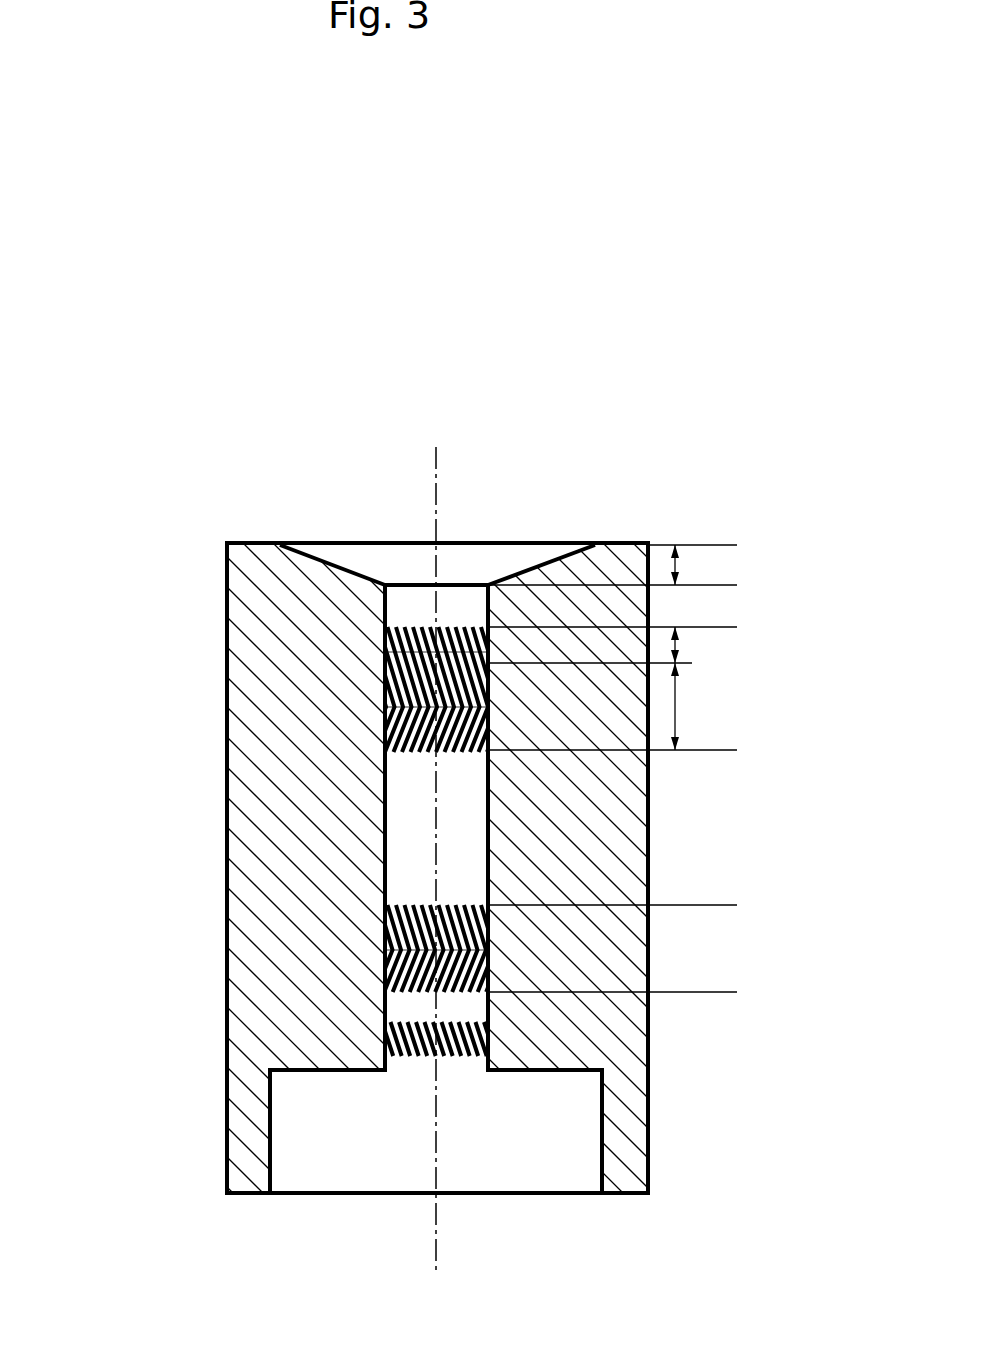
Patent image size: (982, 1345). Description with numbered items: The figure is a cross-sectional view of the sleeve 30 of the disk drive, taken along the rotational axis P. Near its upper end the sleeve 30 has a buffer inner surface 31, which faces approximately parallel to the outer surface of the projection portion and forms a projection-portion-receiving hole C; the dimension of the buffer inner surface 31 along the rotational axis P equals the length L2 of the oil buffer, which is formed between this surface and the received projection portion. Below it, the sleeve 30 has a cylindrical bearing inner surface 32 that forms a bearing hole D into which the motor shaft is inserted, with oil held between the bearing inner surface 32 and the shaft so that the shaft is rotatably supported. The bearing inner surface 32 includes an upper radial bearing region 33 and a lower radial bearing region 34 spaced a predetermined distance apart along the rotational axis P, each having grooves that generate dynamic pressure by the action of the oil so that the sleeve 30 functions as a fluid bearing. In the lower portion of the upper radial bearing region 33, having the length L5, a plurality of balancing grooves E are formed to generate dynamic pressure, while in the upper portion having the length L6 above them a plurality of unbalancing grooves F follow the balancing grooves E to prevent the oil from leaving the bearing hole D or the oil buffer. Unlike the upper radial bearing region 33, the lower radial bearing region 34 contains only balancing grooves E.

The sleeve 30 is at (442, 340).
The buffer inner surface 31 is at (555, 548).
The bearing inner surface 32 is at (357, 543).
The upper radial bearing region 33 is at (760, 628).
The lower radial bearing region 34 is at (760, 905).
The projection-portion-receiving hole C is at (507, 562).
The bearing hole D is at (408, 600).
The rotational axis P is at (442, 842).
The balancing grooves E is at (418, 708).
The unbalancing grooves F is at (418, 652).
The length of the oil buffer L2 is at (612, 565).
The length of the lower portion of the upper radial bearing region L5 is at (703, 706).
The length of the upper portion of the upper radial bearing region L6 is at (702, 645).